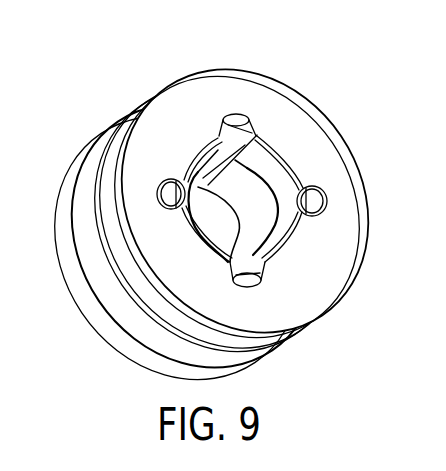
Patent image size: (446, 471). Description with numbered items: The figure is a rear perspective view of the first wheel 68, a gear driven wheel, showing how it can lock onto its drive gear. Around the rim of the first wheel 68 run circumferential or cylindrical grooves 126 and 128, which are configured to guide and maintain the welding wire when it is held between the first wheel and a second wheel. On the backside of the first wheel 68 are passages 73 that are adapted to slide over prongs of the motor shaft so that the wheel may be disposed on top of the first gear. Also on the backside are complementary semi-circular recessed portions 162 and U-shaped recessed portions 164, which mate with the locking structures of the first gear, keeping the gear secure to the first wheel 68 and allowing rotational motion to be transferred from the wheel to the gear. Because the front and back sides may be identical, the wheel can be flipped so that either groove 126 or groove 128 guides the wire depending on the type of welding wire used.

The first wheel 68 is at (319, 75).
The passages 73 is at (233, 116).
The cylindrical groove 126 is at (125, 292).
The cylindrical groove 128 is at (82, 282).
The semi-circular recessed portions 162 is at (278, 163).
The U-shaped recessed portions 164 is at (172, 183).